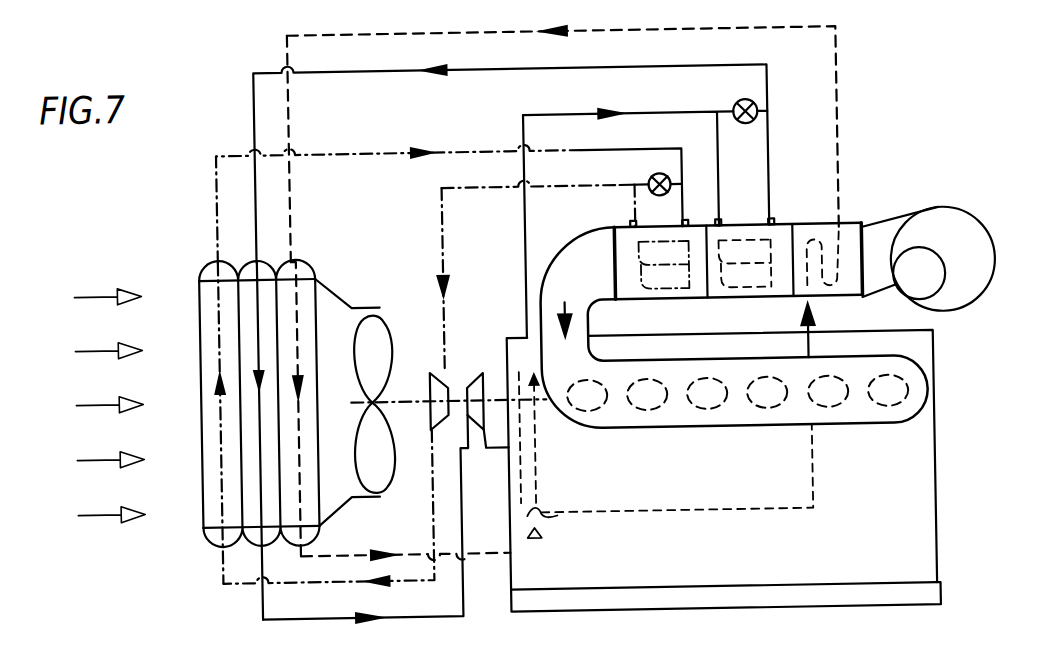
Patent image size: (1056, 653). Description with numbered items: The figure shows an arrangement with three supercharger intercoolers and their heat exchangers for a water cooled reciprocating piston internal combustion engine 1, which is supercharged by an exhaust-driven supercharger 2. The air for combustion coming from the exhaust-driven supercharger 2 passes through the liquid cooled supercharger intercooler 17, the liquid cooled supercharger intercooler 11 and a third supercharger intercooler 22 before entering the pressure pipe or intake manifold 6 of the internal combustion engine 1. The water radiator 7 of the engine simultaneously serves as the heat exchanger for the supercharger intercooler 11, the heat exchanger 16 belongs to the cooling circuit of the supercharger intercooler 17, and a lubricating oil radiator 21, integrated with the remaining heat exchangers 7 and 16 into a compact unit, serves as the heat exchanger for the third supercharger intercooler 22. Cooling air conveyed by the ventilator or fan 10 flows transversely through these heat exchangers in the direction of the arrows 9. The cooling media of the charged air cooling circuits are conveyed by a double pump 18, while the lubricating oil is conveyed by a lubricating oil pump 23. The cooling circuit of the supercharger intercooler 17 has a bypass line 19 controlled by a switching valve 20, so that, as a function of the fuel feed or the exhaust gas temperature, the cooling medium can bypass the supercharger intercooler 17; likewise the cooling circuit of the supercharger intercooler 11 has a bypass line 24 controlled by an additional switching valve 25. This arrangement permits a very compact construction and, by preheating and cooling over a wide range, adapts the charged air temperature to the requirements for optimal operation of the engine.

The internal combustion engine 1 is at (924, 545).
The exhaust-driven supercharger 2 is at (979, 264).
The intake manifold 6 is at (736, 417).
The water radiator 7 is at (262, 266).
The arrows 9 is at (110, 393).
The fan 10 is at (376, 329).
The supercharger intercooler 11 is at (745, 293).
The heat exchanger 16 is at (210, 506).
The supercharger intercooler 17 is at (652, 292).
The double pump 18 is at (476, 371).
The bypass line 19 is at (623, 186).
The switching valve 20 is at (674, 164).
The lubricating oil radiator 21 is at (301, 258).
The third supercharger intercooler 22 is at (822, 228).
The lubricating oil pump 23 is at (533, 418).
The bypass line 24 is at (697, 114).
The switching valve 25 is at (746, 130).